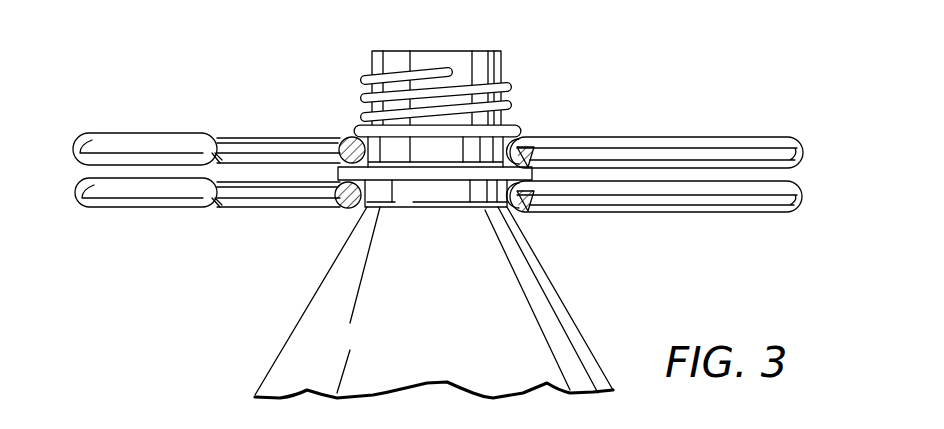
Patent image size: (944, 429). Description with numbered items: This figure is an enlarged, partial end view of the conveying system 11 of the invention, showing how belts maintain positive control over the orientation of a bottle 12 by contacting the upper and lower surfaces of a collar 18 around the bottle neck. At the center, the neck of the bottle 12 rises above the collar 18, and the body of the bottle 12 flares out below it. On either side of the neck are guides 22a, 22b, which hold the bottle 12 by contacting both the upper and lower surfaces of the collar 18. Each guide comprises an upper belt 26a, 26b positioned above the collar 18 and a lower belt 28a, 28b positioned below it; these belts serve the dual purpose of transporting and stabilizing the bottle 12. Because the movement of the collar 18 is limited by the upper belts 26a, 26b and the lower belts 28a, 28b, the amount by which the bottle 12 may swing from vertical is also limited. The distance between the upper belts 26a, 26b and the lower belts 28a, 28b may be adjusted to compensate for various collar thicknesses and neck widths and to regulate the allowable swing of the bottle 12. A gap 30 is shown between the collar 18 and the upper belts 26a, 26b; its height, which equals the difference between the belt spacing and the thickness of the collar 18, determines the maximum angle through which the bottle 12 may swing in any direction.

The conveying system 11 is at (638, 114).
The bottle 12 is at (570, 296).
The collar 18 is at (433, 183).
The guide 22a is at (218, 166).
The guide 22b is at (701, 174).
The upper belt 26a is at (172, 132).
The upper belt 26b is at (793, 137).
The lower belt 28a is at (160, 200).
The lower belt 28b is at (785, 213).
The gap 30 is at (525, 167).